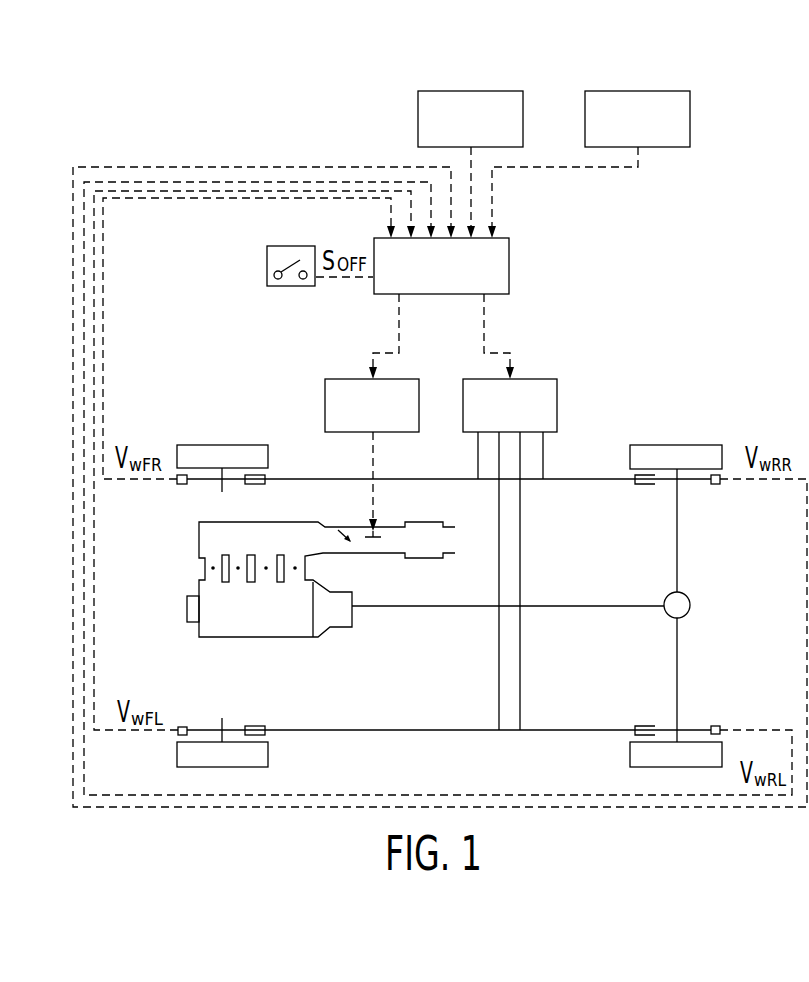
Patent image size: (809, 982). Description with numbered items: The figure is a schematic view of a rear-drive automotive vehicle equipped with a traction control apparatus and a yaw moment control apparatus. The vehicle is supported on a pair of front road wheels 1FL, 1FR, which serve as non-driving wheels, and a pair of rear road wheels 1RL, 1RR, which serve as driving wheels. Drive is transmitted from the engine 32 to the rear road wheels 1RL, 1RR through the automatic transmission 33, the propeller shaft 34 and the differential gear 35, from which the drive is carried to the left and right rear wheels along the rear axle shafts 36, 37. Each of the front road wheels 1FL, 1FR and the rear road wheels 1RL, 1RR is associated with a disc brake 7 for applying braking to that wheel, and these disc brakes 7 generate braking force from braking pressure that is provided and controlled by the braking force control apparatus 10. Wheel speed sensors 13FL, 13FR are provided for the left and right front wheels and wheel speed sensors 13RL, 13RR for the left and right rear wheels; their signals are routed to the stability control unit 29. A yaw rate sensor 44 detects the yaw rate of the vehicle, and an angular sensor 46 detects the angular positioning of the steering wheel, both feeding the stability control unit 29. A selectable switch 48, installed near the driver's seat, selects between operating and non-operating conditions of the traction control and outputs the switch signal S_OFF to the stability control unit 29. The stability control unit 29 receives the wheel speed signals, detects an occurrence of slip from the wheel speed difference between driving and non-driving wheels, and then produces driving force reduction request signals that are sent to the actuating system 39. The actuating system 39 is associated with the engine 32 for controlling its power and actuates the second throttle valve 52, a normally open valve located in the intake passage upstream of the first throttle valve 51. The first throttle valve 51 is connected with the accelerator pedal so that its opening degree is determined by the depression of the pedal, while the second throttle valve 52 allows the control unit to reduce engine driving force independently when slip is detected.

The front right road wheel 1FR is at (227, 450).
The rear right road wheel 1RR is at (686, 450).
The front left road wheel 1FL is at (260, 755).
The rear left road wheel 1RL is at (630, 757).
The disc brake 7 is at (252, 485).
The braking force control apparatus 10 is at (545, 379).
The wheel speed sensor 13FR is at (182, 485).
The wheel speed sensor 13RR is at (718, 485).
The wheel speed sensor 13FL is at (183, 726).
The wheel speed sensor 13RL is at (717, 726).
The stability control unit 29 is at (509, 259).
The engine 32 is at (232, 638).
The automatic transmission 33 is at (343, 629).
The propeller shaft 34 is at (590, 603).
The differential gear 35 is at (690, 609).
The rear right axle shaft 36 is at (677, 555).
The rear left axle shaft 37 is at (677, 635).
The actuating system 39 is at (338, 379).
The yaw rate sensor 44 is at (505, 90).
The angular sensor 46 is at (653, 90).
The selectable switch 48 is at (293, 246).
The first throttle valve 51 is at (347, 540).
The second throttle valve 52 is at (380, 537).